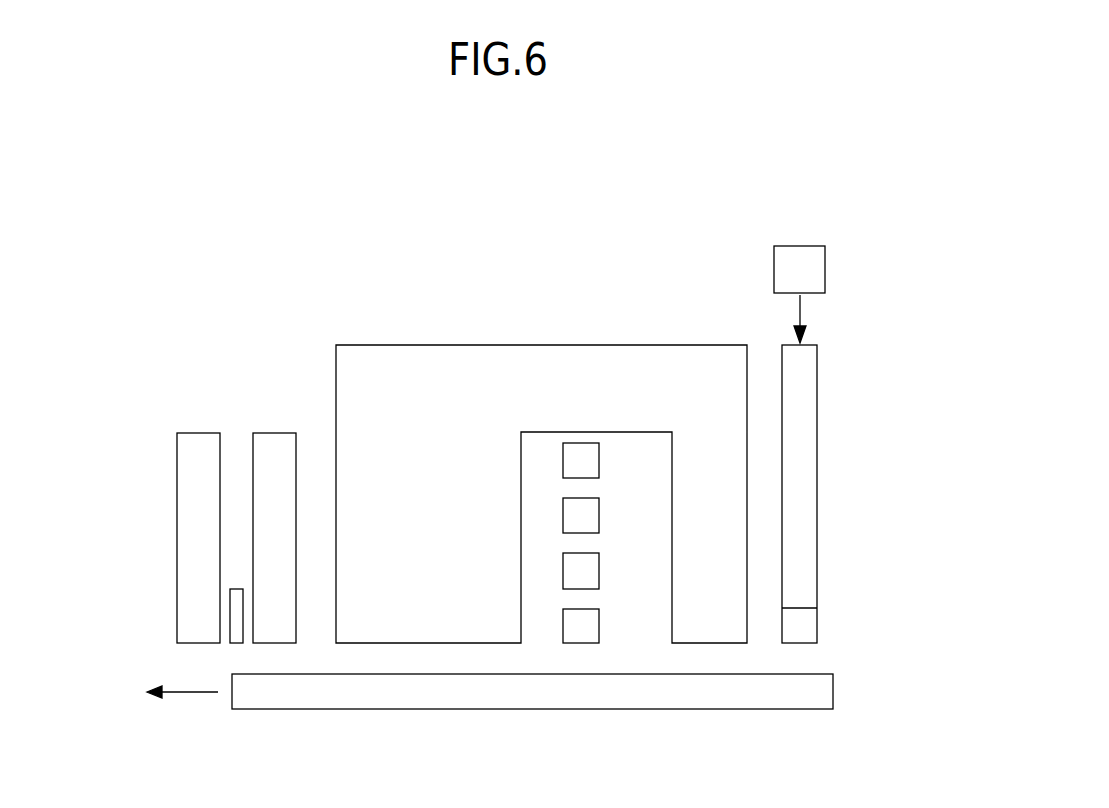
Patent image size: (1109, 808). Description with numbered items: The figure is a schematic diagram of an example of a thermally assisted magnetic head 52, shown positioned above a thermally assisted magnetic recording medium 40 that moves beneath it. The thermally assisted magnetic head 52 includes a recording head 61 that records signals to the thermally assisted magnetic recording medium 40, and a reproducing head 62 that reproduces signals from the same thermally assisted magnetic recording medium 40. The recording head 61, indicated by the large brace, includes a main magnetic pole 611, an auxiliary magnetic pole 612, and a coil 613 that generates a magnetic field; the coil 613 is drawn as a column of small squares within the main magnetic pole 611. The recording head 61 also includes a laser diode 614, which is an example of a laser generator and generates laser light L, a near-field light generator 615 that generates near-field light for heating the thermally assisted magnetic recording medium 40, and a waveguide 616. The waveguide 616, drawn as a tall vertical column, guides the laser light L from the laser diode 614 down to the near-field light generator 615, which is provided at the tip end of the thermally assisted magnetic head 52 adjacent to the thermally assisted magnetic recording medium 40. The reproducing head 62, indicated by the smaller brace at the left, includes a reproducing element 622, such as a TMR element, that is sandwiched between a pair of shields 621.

The thermally assisted magnetic head 52 is at (897, 124).
The recording head 61 is at (850, 205).
The main magnetic pole 611 is at (723, 593).
The auxiliary magnetic pole 612 is at (468, 495).
The coil 613 is at (582, 463).
The laser diode 614 is at (810, 268).
The near-field light generator 615 is at (800, 624).
The waveguide 616 is at (800, 457).
The laser light L is at (800, 310).
The reproducing head 62 is at (302, 357).
The shields 621 is at (275, 448).
The reproducing element 622 is at (237, 613).
The thermally assisted magnetic recording medium 40 is at (826, 690).